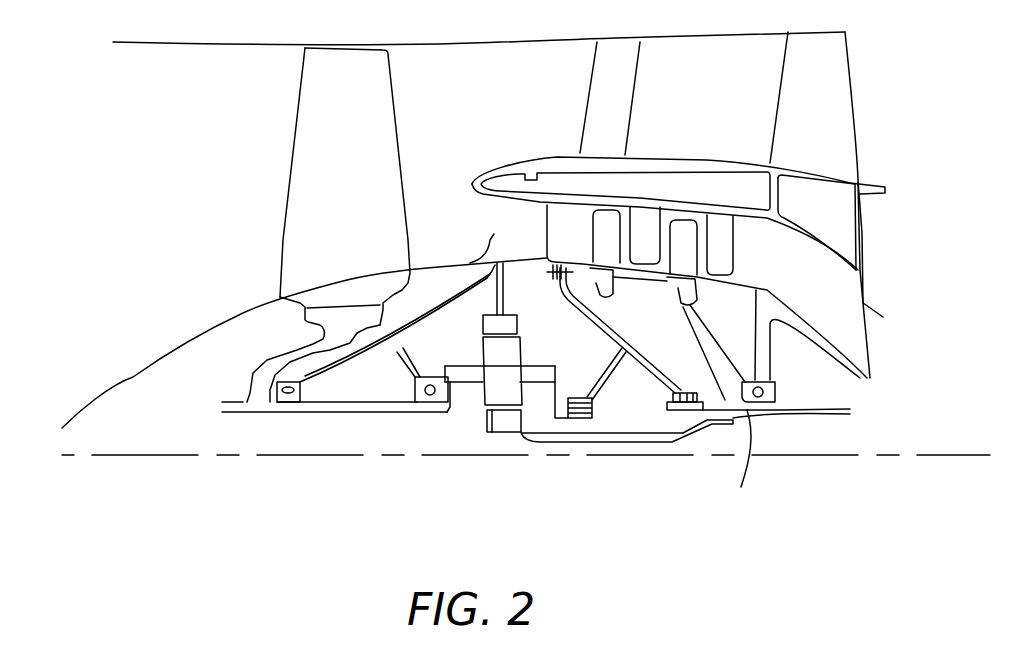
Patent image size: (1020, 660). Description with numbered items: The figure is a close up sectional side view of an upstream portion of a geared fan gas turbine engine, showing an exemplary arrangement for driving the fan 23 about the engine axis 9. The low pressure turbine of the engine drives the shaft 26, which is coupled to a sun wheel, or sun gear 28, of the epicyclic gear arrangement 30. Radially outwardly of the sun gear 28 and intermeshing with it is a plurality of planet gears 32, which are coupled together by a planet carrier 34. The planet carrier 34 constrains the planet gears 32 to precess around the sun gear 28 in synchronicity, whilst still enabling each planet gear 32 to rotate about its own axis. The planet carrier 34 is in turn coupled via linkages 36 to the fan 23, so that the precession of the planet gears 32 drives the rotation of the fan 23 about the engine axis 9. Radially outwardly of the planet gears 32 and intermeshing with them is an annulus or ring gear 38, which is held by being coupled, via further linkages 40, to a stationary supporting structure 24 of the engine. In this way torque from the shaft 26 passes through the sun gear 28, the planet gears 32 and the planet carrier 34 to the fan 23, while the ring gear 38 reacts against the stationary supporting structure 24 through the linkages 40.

The engine axis 9 is at (175, 456).
The fan 23 is at (305, 155).
The stationary supporting structure 24 is at (505, 232).
The shaft 26 is at (630, 437).
The sun gear 28 is at (514, 424).
The epicyclic gear arrangement 30 is at (478, 407).
The planet gears 32 is at (484, 408).
The planet carrier 34 is at (552, 393).
The linkages 36 is at (467, 407).
The ring gear 38 is at (500, 323).
The linkages 40 is at (496, 302).